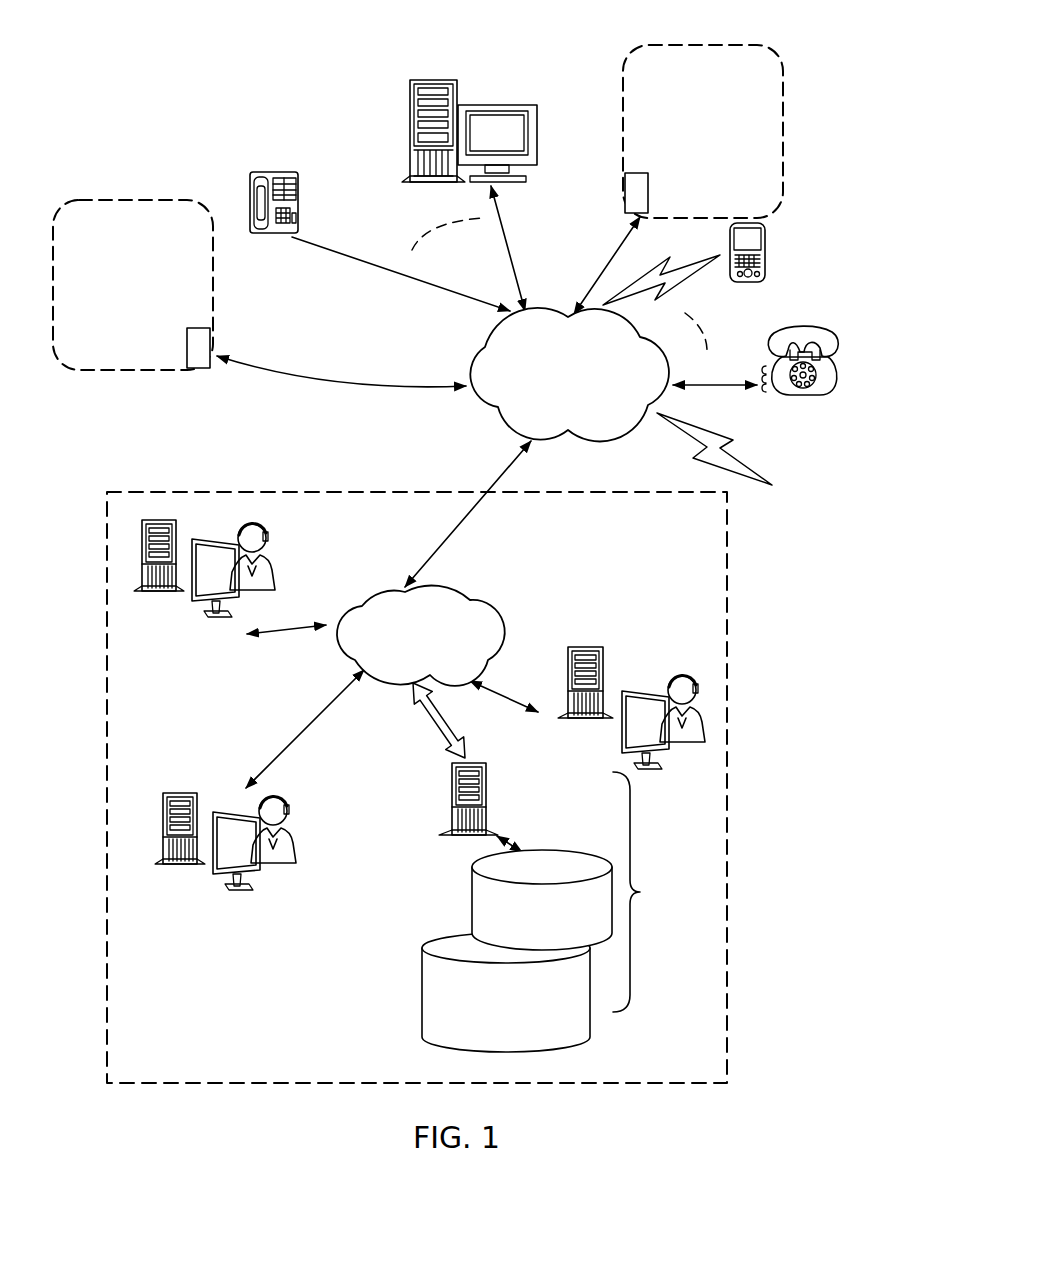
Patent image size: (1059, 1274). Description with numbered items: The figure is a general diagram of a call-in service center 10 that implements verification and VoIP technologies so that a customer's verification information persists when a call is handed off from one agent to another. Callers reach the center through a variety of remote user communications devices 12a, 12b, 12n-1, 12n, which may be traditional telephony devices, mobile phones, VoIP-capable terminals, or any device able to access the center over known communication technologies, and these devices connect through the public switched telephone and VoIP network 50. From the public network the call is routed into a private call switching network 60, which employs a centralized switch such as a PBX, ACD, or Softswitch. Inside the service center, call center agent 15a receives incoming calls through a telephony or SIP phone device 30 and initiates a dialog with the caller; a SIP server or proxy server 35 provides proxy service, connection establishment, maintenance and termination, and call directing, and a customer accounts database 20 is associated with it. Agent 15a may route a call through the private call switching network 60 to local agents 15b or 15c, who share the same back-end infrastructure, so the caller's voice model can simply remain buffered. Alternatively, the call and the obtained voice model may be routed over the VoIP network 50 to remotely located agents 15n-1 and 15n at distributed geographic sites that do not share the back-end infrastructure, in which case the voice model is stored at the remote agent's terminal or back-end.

The call-in service center 10 is at (205, 1025).
The remote user communications device 12a is at (277, 172).
The remote user communications device 12b is at (498, 105).
The remote user communications device 12n-1 is at (766, 250).
The remote user communications device 12n is at (838, 332).
The call center agent 15a is at (682, 672).
The call center agent 15b is at (295, 833).
The call center agent 15c is at (270, 537).
The call center agent 15n is at (137, 200).
The call center agent 15n-1 is at (731, 45).
The customer accounts database 20 is at (641, 892).
The telephony or SIP phone device 30 is at (604, 668).
The SIP server or proxy server 35 is at (451, 781).
The PSTN/VoIP network 50 is at (545, 312).
The private call switching network 60 is at (379, 588).